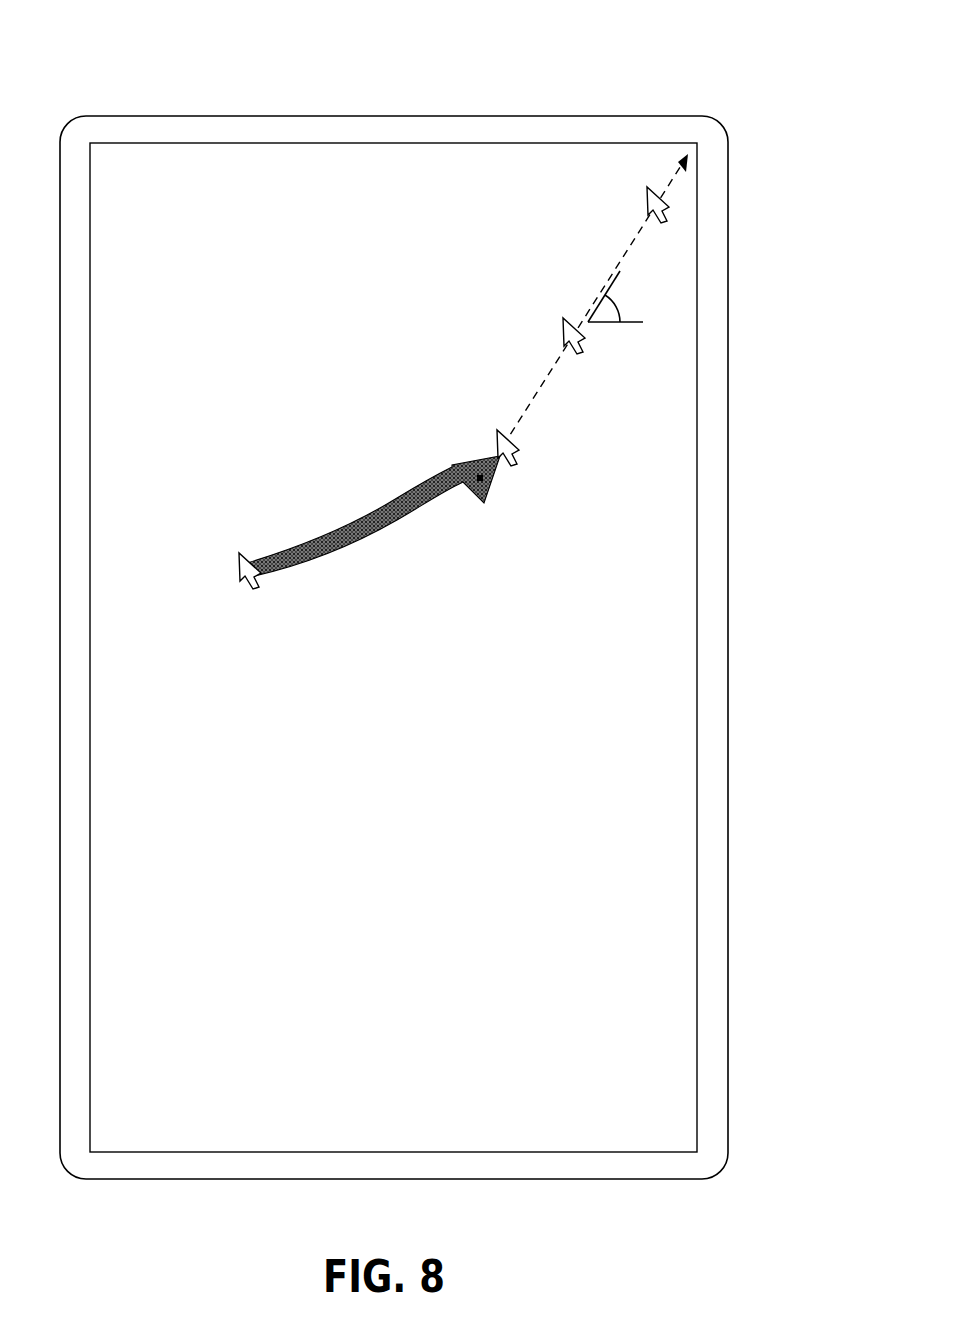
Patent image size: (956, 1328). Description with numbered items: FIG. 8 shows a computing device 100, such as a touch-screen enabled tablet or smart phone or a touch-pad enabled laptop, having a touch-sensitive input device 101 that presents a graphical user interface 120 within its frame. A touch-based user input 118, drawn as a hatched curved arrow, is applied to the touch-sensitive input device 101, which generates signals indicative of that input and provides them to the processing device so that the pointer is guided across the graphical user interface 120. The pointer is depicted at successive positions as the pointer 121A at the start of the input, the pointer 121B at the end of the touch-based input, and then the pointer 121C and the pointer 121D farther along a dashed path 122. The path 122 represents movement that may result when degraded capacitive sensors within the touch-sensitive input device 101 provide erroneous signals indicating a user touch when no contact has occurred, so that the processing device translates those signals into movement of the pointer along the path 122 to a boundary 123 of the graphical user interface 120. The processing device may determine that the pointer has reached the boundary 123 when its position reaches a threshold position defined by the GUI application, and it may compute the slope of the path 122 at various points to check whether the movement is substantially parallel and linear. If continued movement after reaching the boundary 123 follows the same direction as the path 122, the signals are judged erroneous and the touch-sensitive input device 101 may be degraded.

The computing device 100 is at (170, 40).
The touch-sensitive input device 101 is at (543, 163).
The graphical user interface 120 is at (602, 677).
The touch-based user input 118 is at (373, 528).
The pointer 121A is at (258, 572).
The pointer 121B is at (515, 453).
The pointer 121C is at (583, 340).
The pointer 121D is at (667, 207).
The path 122 is at (543, 385).
The boundary 123 is at (697, 178).